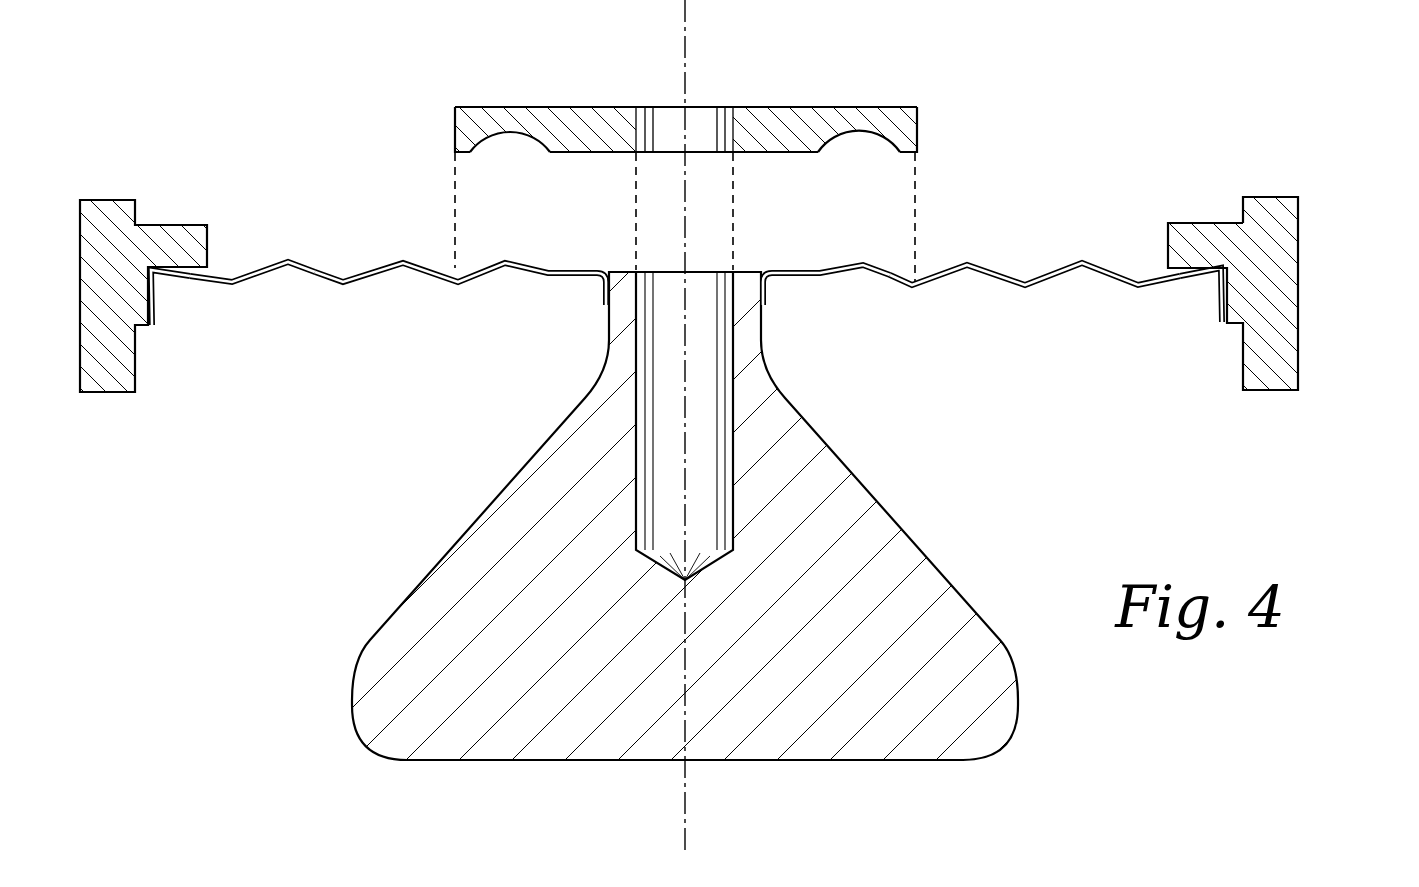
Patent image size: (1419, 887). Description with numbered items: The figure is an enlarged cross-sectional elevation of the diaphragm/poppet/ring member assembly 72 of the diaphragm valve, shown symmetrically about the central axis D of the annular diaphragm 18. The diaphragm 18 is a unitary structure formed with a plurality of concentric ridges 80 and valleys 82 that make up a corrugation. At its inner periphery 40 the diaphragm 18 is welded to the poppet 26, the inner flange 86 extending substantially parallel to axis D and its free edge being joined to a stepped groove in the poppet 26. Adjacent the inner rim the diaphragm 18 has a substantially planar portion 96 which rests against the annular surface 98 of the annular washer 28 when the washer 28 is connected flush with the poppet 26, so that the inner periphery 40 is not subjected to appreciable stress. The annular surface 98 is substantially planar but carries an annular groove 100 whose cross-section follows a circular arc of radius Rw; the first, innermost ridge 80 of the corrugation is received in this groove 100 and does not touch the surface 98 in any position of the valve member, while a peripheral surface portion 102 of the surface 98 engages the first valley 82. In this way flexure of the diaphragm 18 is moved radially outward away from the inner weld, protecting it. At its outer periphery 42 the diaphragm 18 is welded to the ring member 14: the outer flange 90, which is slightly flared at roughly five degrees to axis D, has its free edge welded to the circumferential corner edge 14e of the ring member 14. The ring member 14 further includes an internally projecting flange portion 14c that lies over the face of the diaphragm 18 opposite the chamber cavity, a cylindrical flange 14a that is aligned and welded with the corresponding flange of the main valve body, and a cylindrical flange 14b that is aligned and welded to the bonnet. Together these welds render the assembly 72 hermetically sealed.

The central axis D is at (690, 33).
The ring member 14 is at (1284, 246).
The cylindrical flange 14a is at (1292, 360).
The cylindrical flange 14b is at (1270, 197).
The internally projecting flange portion 14c is at (1197, 223).
The circumferential corner edge 14e is at (1227, 327).
The annular diaphragm 18 is at (992, 328).
The poppet 26 is at (930, 578).
The annular washer 28 is at (726, 134).
The inner periphery 40 is at (378, 257).
The outer periphery 42 is at (173, 293).
The diaphragm/poppet/ring member assembly 72 is at (635, 516).
The ridges 80 is at (150, 258).
The valleys 82 is at (234, 291).
The inner flange 86 is at (769, 299).
The outer flange 90 is at (1221, 305).
The substantially planar portion 96 is at (808, 279).
The annular surface 98 is at (769, 163).
The annular groove 100 is at (901, 160).
The peripheral surface portion 102 is at (458, 168).
The radius of annular groove Rw is at (844, 140).